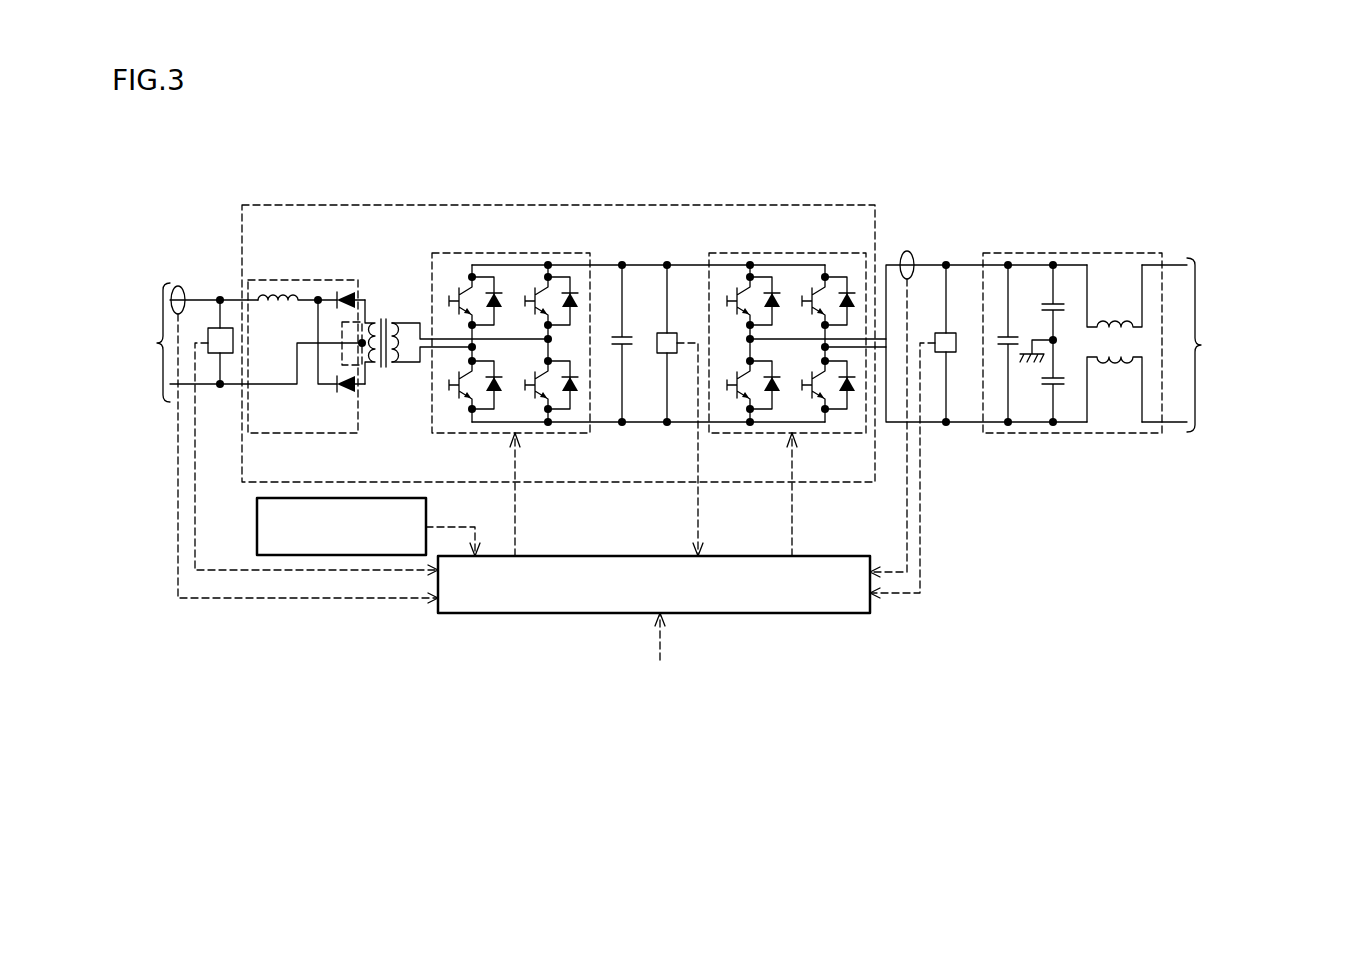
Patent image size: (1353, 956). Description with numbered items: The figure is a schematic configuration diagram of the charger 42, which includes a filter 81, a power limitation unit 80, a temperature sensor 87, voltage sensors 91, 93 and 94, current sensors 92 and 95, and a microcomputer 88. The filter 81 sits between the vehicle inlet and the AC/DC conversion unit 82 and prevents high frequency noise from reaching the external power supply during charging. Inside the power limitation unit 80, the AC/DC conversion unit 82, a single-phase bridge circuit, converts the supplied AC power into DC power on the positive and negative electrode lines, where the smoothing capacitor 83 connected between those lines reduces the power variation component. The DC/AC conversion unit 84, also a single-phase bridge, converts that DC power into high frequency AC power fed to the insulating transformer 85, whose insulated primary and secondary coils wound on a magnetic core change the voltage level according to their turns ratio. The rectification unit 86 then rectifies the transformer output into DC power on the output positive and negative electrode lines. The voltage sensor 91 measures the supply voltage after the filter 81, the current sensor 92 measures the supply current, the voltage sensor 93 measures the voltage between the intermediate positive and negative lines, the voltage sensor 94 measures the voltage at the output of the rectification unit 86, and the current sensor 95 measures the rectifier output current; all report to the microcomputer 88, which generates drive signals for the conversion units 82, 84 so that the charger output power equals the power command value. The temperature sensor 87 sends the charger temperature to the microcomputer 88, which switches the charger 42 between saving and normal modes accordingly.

The charger 42 is at (270, 167).
The power limitation unit 80 is at (818, 204).
The filter 81 is at (1093, 253).
The AC/DC conversion unit 82 is at (808, 253).
The smoothing capacitor 83 is at (618, 333).
The DC/AC conversion unit 84 is at (532, 253).
The insulating transformer 85 is at (393, 276).
The rectification unit 86 is at (320, 280).
The temperature sensor 87 is at (257, 528).
The microcomputer 88 is at (815, 556).
The voltage sensor 91 is at (948, 333).
The current sensor 92 is at (907, 251).
The voltage sensor 93 is at (660, 333).
The voltage sensor 94 is at (220, 328).
The current sensor 95 is at (178, 286).